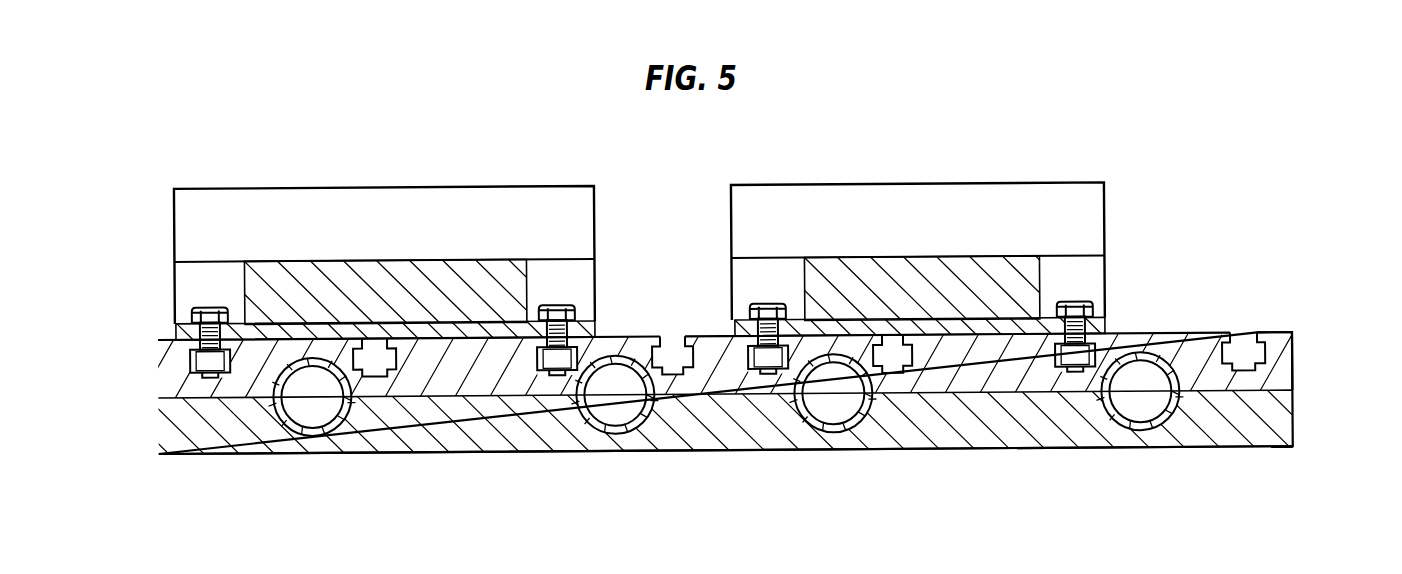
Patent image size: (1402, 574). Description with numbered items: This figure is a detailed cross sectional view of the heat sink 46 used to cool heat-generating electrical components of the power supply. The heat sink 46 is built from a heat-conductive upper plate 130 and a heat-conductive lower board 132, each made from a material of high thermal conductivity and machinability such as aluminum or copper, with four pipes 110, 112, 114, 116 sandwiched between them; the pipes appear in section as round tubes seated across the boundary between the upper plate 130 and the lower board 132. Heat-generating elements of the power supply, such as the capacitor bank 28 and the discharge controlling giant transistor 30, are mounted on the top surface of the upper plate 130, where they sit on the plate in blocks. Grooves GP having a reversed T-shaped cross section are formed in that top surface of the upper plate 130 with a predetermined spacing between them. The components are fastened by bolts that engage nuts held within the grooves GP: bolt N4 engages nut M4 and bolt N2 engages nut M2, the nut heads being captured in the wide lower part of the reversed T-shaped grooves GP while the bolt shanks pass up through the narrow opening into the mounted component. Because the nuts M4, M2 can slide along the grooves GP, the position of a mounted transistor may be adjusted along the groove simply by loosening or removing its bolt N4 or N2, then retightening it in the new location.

The capacitor bank 28 is at (287, 189).
The discharge controlling giant transistor 30 is at (1066, 182).
The heat sink 46 is at (1309, 367).
The pipe 110 is at (312, 358).
The pipe 112 is at (617, 356).
The pipe 114 is at (839, 355).
The pipe 116 is at (1147, 350).
The upper plate 130 is at (1283, 332).
The lower board 132 is at (958, 450).
The grooves GP is at (668, 350).
The bolt N4 is at (556, 307).
The nut M4 is at (192, 365).
The bolt N2 is at (760, 305).
The nut M2 is at (746, 357).